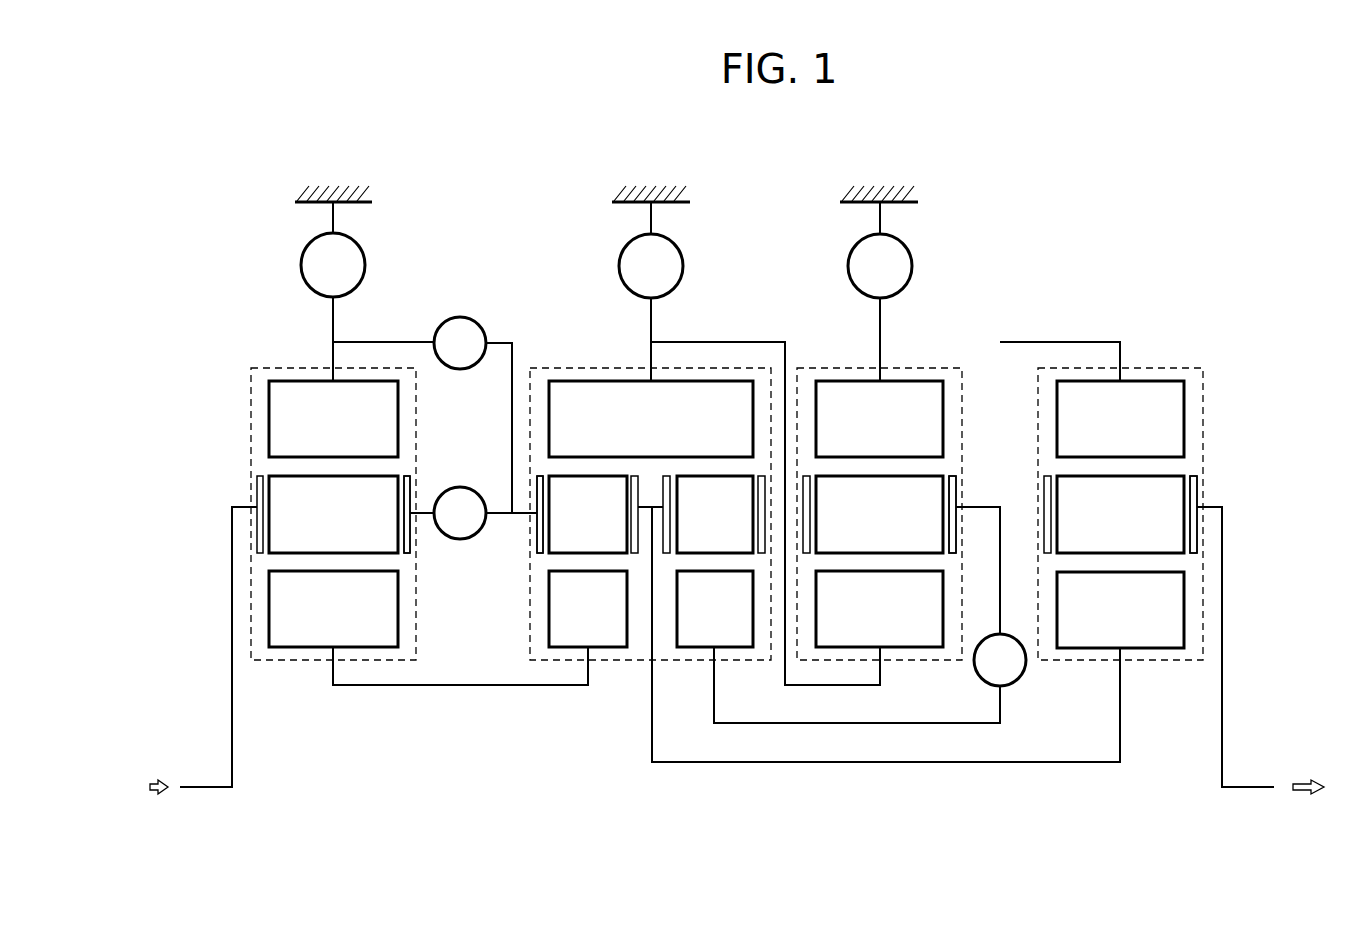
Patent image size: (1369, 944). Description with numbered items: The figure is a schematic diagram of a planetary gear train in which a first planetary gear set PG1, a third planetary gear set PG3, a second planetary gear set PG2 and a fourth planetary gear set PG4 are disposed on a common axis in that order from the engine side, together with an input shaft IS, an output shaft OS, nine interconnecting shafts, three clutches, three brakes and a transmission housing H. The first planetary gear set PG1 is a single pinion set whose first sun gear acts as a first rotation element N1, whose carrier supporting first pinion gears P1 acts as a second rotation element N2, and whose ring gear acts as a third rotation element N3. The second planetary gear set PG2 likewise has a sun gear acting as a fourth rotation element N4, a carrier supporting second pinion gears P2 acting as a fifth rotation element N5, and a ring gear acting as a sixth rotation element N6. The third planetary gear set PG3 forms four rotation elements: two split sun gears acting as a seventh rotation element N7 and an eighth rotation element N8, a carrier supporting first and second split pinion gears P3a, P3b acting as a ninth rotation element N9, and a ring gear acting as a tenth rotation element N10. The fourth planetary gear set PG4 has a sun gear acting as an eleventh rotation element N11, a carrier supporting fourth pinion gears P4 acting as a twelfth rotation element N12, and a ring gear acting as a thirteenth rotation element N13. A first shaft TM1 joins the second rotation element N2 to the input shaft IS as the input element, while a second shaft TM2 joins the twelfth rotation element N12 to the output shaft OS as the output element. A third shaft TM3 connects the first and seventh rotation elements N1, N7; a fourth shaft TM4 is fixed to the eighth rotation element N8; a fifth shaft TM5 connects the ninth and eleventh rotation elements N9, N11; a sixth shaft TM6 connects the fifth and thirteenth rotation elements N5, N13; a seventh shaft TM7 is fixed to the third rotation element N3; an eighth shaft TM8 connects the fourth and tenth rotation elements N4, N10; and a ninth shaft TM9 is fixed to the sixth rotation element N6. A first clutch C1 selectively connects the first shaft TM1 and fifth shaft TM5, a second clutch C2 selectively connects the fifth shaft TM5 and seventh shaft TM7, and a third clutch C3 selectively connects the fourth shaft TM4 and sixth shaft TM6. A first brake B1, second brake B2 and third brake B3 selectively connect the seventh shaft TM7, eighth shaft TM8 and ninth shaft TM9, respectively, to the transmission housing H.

The transmission housing H is at (337, 192).
The first brake B1 is at (333, 291).
The second brake B2 is at (651, 291).
The third brake B3 is at (880, 291).
The first clutch C1 is at (460, 513).
The second clutch C2 is at (460, 343).
The third clutch C3 is at (1000, 660).
The first shaft TM1 is at (232, 540).
The second shaft TM2 is at (1222, 630).
The third shaft TM3 is at (440, 686).
The fourth shaft TM4 is at (773, 724).
The fifth shaft TM5 is at (690, 763).
The sixth shaft TM6 is at (1056, 342).
The seventh shaft TM7 is at (333, 320).
The eighth shaft TM8 is at (736, 342).
The ninth shaft TM9 is at (878, 323).
The input shaft IS is at (208, 788).
The output shaft OS is at (1240, 788).
The first planetary gear set PG1 is at (299, 672).
The second planetary gear set PG2 is at (915, 672).
The third planetary gear set PG3 is at (618, 672).
The fourth planetary gear set PG4 is at (1163, 672).
The first rotation element N1 is at (333, 609).
The second rotation element N2 is at (410, 490).
The third rotation element N3 is at (333, 419).
The fourth rotation element N4 is at (879, 609).
The fifth rotation element N5 is at (956, 487).
The sixth rotation element N6 is at (879, 419).
The seventh rotation element N7 is at (588, 609).
The eighth rotation element N8 is at (715, 609).
The ninth rotation element N9 is at (535, 538).
The tenth rotation element N10 is at (651, 419).
The eleventh rotation element N11 is at (1120, 610).
The twelfth rotation element N12 is at (1198, 490).
The thirteenth rotation element N13 is at (1120, 419).
The first pinion gears P1 is at (345, 514).
The second pinion gears P2 is at (879, 514).
The first split pinion gears P3a is at (562, 514).
The second split pinion gears P3b is at (714, 514).
The fourth pinion gears P4 is at (1120, 514).